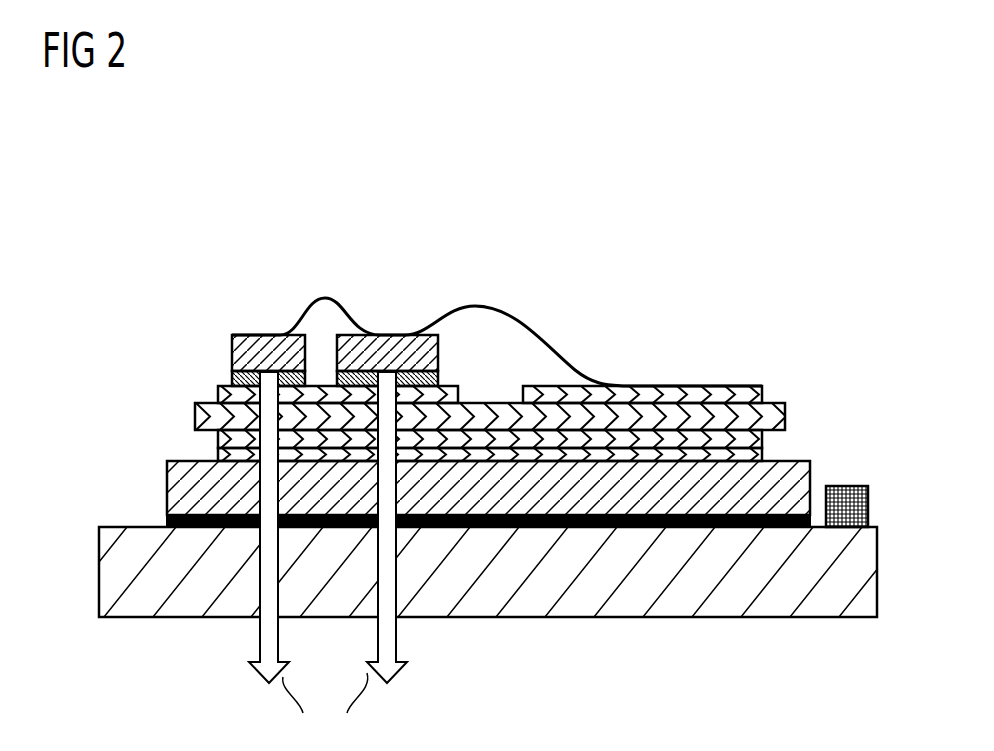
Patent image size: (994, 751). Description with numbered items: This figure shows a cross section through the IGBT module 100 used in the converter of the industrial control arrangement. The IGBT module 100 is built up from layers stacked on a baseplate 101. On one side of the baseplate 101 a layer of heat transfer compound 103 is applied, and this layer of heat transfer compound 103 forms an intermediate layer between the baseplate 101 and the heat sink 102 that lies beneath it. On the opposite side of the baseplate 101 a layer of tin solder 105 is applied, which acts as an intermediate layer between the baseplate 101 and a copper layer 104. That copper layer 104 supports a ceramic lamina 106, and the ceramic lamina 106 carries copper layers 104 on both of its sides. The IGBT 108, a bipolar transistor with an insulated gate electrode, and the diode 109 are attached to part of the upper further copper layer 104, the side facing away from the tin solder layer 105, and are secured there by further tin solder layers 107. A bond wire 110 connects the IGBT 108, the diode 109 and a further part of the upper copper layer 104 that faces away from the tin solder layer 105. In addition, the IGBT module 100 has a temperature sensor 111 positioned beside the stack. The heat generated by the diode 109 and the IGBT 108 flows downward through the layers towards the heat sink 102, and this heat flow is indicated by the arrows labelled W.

The IGBT module 100 is at (141, 247).
The baseplate 101 is at (167, 488).
The heat sink 102 is at (622, 618).
The heat transfer compound 103 is at (167, 521).
The copper layer 104 is at (762, 392).
The tin solder layer 105 is at (218, 455).
The ceramic lamina 106 is at (195, 416).
The further tin solder layers 107 is at (232, 378).
The IGBT 108 is at (438, 347).
The diode 109 is at (232, 350).
The bond wire 110 is at (568, 378).
The temperature sensor 111 is at (858, 486).